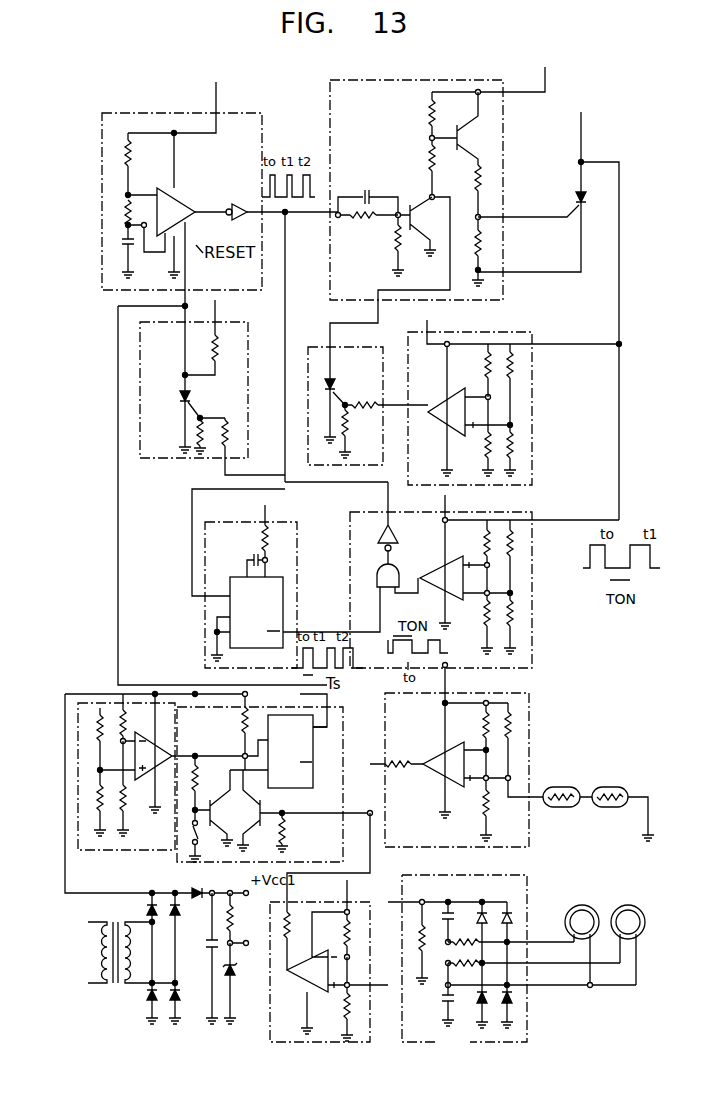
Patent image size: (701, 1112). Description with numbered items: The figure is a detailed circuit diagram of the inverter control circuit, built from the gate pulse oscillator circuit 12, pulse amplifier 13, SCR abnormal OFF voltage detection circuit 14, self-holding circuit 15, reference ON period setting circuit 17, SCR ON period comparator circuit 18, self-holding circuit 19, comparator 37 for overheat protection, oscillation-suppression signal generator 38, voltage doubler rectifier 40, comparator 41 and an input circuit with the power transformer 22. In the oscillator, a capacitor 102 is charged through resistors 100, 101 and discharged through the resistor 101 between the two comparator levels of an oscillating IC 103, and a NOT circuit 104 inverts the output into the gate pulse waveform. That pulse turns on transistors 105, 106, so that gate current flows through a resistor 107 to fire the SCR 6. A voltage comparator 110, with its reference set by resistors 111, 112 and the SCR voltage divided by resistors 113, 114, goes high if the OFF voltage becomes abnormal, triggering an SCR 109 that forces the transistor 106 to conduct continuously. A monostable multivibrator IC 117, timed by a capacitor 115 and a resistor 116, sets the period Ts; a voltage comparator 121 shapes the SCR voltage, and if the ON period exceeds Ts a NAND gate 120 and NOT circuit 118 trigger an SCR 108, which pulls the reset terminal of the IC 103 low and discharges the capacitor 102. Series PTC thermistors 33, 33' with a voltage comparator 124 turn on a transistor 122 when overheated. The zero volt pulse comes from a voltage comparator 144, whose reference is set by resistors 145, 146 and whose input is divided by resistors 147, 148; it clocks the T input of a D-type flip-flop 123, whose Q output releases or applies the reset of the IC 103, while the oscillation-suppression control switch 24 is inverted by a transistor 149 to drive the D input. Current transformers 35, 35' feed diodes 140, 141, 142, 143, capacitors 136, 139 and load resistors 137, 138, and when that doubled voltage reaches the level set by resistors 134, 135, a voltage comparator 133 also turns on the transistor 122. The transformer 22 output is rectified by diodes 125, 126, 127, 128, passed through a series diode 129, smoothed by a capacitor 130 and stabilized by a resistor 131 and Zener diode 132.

The SCR 6 is at (594, 186).
The gate pulse oscillator circuit 12 is at (130, 113).
The pulse amplifier 13 is at (427, 80).
The SCR abnormal OFF voltage detection circuit 14 is at (530, 333).
The self-holding circuit 15 is at (316, 347).
The reference ON period setting circuit 17 is at (296, 580).
The SCR ON period comparator circuit 18 is at (532, 560).
The self-holding circuit 19 is at (244, 360).
The power transformer 22 is at (119, 986).
The oscillation-suppression control switch 24 is at (199, 843).
The thermistor 33 is at (561, 781).
The thermistor 33' is at (610, 780).
The current transformer 35 is at (582, 927).
The current transformer 35' is at (628, 924).
The comparator 37 is at (530, 730).
The oscillation-suppression signal generator 38 is at (343, 725).
The voltage doubler rectifier 40 is at (528, 880).
The comparator 41 is at (300, 902).
The resistor 100 is at (136, 150).
The resistor 101 is at (124, 207).
The capacitor 102 is at (122, 241).
The oscillating IC 103 is at (192, 197).
The NOT circuit 104 is at (237, 202).
The transistor 105 is at (412, 204).
The transistor 106 is at (484, 139).
The resistor 107 is at (480, 185).
The SCR 108 is at (192, 398).
The SCR 109 is at (337, 387).
The voltage comparator 110 is at (443, 402).
The resistor 111 is at (486, 371).
The resistor 112 is at (486, 445).
The resistor 113 is at (512, 370).
The resistor 114 is at (512, 445).
The capacitor 115 is at (252, 557).
The resistor 116 is at (268, 556).
The monostable multivibrator IC 117 is at (285, 605).
The NOT circuit 118 is at (393, 537).
The NAND gate 120 is at (377, 581).
The voltage comparator 121 is at (436, 567).
The transistor 122 is at (262, 806).
The D-type flip-flop 123 is at (313, 788).
The voltage comparator 124 is at (432, 752).
The diode 125 is at (147, 910).
The diode 126 is at (146, 1001).
The diode 127 is at (178, 917).
The diode 128 is at (182, 1005).
The diode 129 is at (200, 878).
The capacitor 130 is at (209, 951).
The resistor 131 is at (233, 920).
The Zener diode 132 is at (236, 973).
The voltage comparator 133 is at (298, 982).
The resistor 134 is at (349, 936).
The resistor 135 is at (350, 1007).
The capacitor 136 is at (462, 894).
The load resistor 137 is at (456, 940).
The load resistor 138 is at (456, 962).
The capacitor 139 is at (442, 999).
The diode 140 is at (485, 908).
The diode 141 is at (475, 1005).
The diode 142 is at (512, 917).
The diode 143 is at (513, 999).
The voltage comparator 144 is at (173, 744).
The resistor 145 is at (123, 706).
The resistor 146 is at (126, 813).
The resistor 147 is at (98, 713).
The resistor 148 is at (98, 801).
The transistor 149 is at (202, 774).